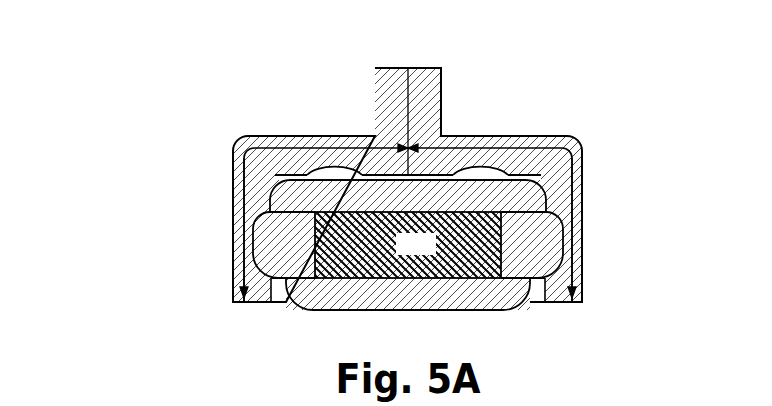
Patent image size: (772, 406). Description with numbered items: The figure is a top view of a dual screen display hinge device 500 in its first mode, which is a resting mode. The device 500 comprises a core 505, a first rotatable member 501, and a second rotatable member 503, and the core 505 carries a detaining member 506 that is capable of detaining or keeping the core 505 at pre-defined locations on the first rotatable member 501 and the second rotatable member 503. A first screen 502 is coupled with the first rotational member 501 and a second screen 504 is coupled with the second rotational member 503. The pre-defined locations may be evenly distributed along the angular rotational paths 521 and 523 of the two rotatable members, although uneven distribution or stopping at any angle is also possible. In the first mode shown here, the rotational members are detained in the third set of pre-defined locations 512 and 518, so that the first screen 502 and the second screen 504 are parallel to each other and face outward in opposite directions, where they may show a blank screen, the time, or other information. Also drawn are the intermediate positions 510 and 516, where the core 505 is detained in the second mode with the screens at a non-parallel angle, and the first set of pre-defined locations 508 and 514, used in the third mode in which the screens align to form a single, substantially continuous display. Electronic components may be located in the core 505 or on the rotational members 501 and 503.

The dual screen display hinge device 500 is at (40, 43).
The first rotatable member 501 is at (243, 124).
The first screen 502 is at (243, 222).
The second rotatable member 503 is at (612, 128).
The second screen 504 is at (565, 222).
The core 505 is at (348, 312).
The detaining member 506 is at (398, 254).
The first set of pre-defined locations 508 is at (337, 163).
The intermediate position 510 is at (297, 177).
The third set of pre-defined locations 512 is at (253, 258).
The first set of pre-defined locations 514 is at (476, 162).
The intermediate position 516 is at (540, 180).
The third set of pre-defined locations 518 is at (563, 258).
The angular rotational path 521 is at (290, 148).
The angular rotational path 523 is at (543, 147).